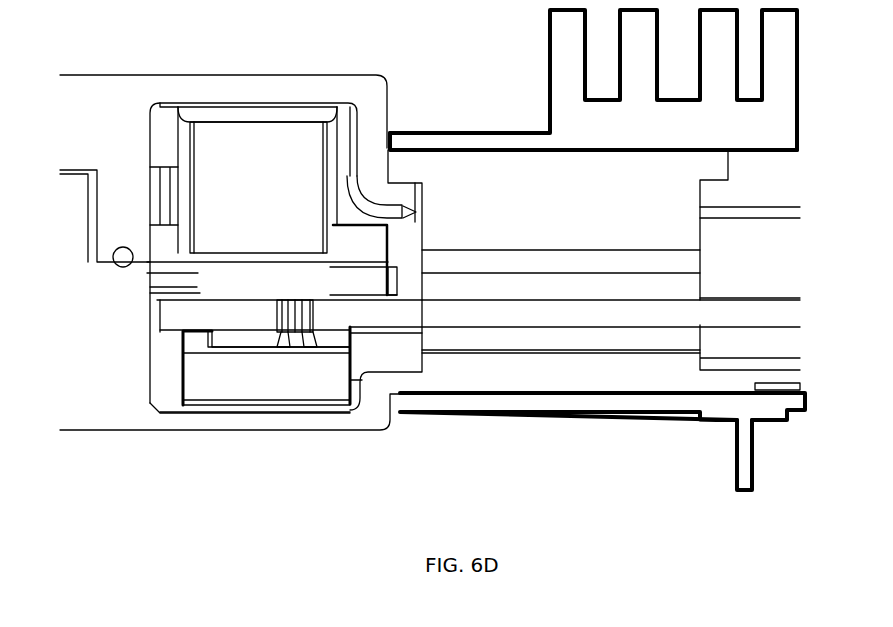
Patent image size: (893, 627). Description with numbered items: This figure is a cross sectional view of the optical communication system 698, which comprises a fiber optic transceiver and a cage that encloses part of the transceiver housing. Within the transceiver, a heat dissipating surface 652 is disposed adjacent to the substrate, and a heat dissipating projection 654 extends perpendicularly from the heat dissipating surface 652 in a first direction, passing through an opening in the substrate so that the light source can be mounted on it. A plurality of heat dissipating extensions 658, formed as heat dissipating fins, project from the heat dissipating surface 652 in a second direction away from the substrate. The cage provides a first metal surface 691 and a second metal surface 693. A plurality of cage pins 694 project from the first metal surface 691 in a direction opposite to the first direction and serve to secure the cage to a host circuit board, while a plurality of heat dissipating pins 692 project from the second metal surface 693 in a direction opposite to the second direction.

The optical communication system 698 is at (53, 16).
The heat dissipating pins 692 is at (548, 50).
The second metal surface 693 is at (488, 130).
The first metal surface 691 is at (497, 412).
The cage pins 694 is at (740, 490).
The heat dissipating surface 652 is at (232, 347).
The heat dissipating projection 654 is at (277, 318).
The heat dissipating extensions 658 is at (198, 377).